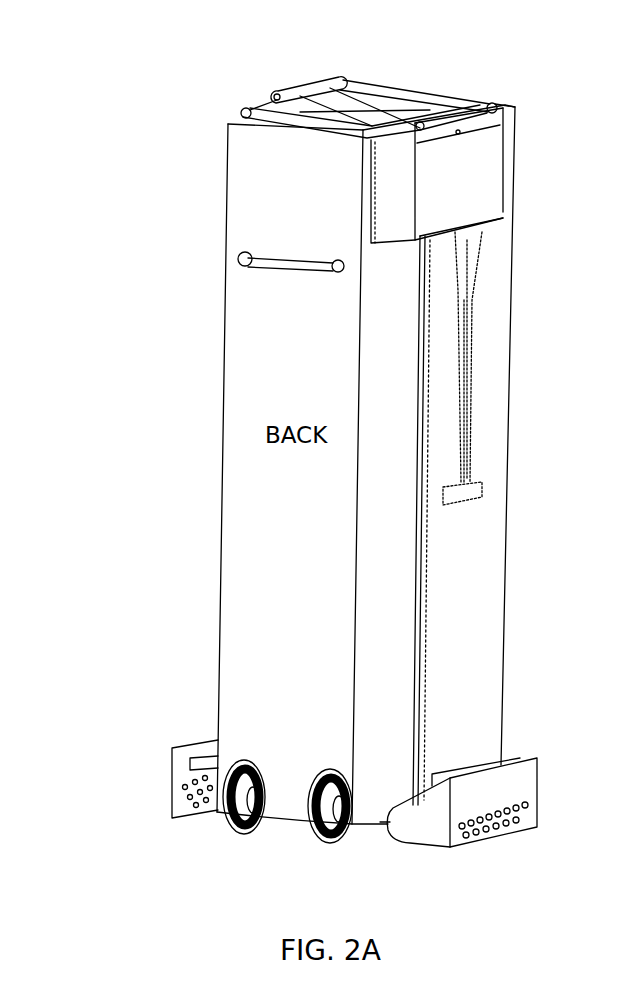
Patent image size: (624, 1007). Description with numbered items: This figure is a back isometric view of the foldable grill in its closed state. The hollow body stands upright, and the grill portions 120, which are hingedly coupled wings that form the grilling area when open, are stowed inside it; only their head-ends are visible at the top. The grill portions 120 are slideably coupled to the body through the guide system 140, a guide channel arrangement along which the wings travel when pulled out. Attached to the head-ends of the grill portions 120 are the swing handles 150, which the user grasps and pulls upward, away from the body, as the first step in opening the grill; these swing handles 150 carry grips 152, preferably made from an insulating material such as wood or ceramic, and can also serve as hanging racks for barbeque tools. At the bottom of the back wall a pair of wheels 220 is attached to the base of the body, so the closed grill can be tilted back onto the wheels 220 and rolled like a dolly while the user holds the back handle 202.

The grill portion 120 is at (477, 162).
The guide system 140 is at (477, 352).
The swing handle 150 is at (470, 96).
The grip 152 is at (272, 92).
The back handle 202 is at (250, 267).
The wheels 220 is at (313, 833).